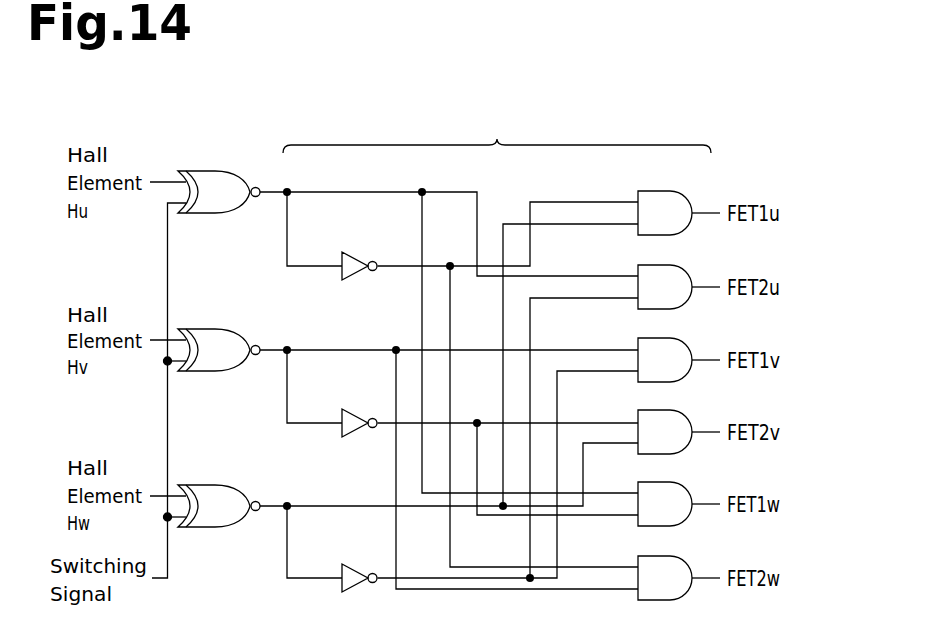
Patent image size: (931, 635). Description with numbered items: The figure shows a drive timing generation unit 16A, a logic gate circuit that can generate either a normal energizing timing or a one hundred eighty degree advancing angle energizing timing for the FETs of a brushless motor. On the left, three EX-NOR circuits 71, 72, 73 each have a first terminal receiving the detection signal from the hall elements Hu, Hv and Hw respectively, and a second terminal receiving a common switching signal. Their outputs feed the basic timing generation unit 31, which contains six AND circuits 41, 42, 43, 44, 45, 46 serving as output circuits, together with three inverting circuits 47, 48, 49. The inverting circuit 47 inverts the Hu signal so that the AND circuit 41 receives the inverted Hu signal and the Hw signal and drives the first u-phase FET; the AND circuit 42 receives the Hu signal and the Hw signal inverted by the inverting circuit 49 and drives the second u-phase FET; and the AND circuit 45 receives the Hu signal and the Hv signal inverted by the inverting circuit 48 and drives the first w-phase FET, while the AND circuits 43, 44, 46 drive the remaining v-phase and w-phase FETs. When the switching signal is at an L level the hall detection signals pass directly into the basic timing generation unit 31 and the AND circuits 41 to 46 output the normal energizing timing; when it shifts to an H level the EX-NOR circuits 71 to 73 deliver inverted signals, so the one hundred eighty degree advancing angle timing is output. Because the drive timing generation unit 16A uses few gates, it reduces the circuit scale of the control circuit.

The drive timing generation unit 16A is at (738, 142).
The basic timing generation unit 31 is at (485, 351).
The AND circuit 41 is at (653, 191).
The AND circuit 42 is at (653, 265).
The AND circuit 43 is at (653, 338).
The AND circuit 44 is at (653, 410).
The AND circuit 45 is at (653, 482).
The AND circuit 46 is at (653, 556).
The inverting circuit 47 is at (350, 252).
The inverting circuit 48 is at (350, 409).
The inverting circuit 49 is at (350, 564).
The EX-NOR circuit 71 is at (205, 171).
The EX-NOR circuit 72 is at (205, 329).
The EX-NOR circuit 73 is at (205, 485).